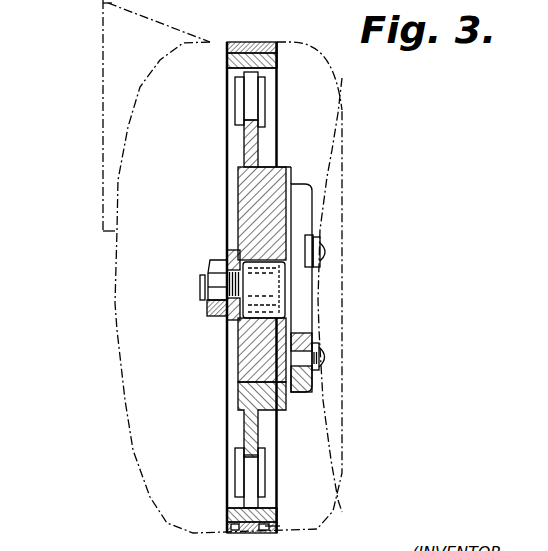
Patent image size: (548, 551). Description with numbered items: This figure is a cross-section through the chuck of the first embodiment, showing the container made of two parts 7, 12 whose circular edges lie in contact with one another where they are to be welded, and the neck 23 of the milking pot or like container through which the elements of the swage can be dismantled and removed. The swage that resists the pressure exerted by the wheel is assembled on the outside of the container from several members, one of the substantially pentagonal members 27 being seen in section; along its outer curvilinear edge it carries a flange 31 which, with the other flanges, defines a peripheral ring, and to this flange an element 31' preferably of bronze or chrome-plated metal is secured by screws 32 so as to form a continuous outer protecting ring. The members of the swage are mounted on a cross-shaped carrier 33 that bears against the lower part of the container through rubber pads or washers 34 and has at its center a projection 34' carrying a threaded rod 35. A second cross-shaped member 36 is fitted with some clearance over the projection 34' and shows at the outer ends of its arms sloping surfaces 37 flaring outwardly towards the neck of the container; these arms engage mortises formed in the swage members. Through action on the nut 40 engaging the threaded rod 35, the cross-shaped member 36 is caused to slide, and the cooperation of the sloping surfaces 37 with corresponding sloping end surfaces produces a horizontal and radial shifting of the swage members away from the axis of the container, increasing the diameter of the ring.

The part of the container 7 is at (330, 57).
The part of the container 12 is at (117, 303).
The neck of the container 23 is at (118, 97).
The pentagonal member of the swage 27 is at (247, 406).
The flange 31 is at (225, 263).
The protecting element 31' is at (227, 275).
The screw 32 is at (278, 526).
The cross-shaped carrier 33 is at (300, 192).
The rubber pad 34 is at (350, 313).
The projection 34' is at (329, 290).
The threaded rod 35 is at (201, 284).
The second cross-shaped member 36 is at (253, 221).
The sloping surface 37 is at (310, 152).
The nut 40 is at (208, 266).